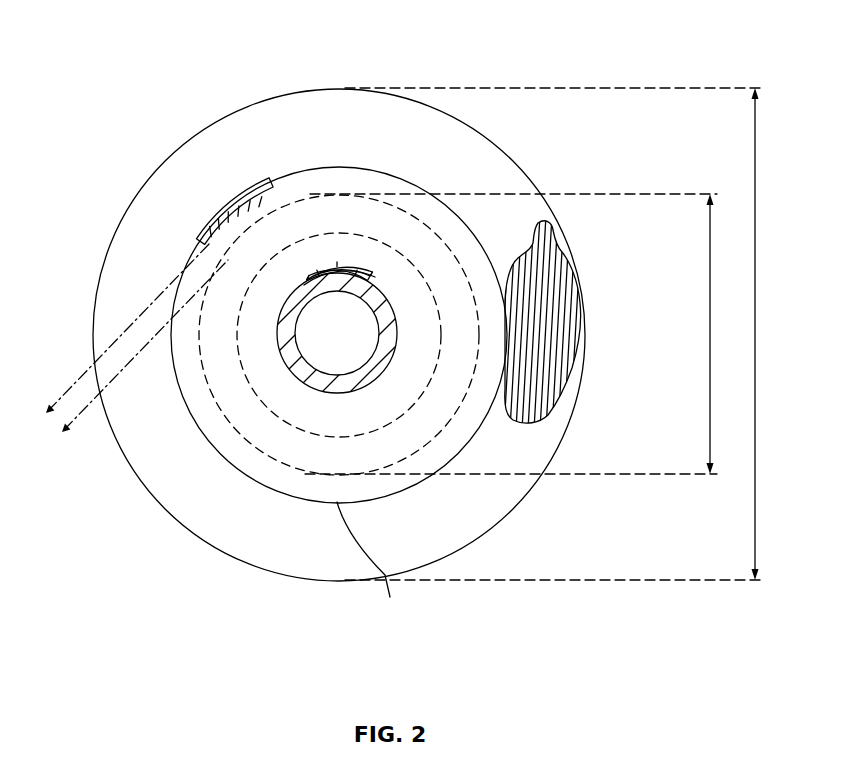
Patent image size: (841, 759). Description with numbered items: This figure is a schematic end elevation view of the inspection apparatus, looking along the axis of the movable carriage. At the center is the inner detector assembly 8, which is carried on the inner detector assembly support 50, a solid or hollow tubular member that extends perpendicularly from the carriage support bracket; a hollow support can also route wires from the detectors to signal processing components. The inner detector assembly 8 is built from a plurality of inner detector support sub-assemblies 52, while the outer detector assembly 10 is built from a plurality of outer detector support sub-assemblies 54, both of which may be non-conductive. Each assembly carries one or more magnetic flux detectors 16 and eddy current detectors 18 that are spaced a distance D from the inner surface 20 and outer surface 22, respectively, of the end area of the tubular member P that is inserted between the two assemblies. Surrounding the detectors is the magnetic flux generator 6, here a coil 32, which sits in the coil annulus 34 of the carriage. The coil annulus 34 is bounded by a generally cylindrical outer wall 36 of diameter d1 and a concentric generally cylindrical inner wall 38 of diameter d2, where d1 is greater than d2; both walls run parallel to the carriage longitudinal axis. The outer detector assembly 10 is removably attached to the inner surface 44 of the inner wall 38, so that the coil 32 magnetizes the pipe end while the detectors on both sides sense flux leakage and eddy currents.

The magnetic flux generator 6 is at (541, 193).
The inner detector assembly 8 is at (367, 263).
The outer detector assembly 10 is at (257, 190).
The magnetic flux detectors 16 is at (207, 233).
The eddy current detectors 18 is at (230, 205).
The inner surface 20 is at (303, 432).
The outer surface 22 is at (238, 432).
The coil 32 is at (553, 277).
The coil annulus 34 is at (533, 458).
The generally cylindrical outer wall 36 is at (473, 540).
The generally cylindrical inner wall 38 is at (370, 564).
The inner surface 44 is at (262, 193).
The inner detector assembly support 50 is at (282, 345).
The inner detector support sub-assemblies 52 is at (373, 277).
The outer detector support sub-assemblies 54 is at (270, 178).
The tubular member P is at (317, 262).
The distance D is at (62, 434).
The diameter of outer wall d1 is at (565, 334).
The diameter of inner wall d2 is at (523, 334).